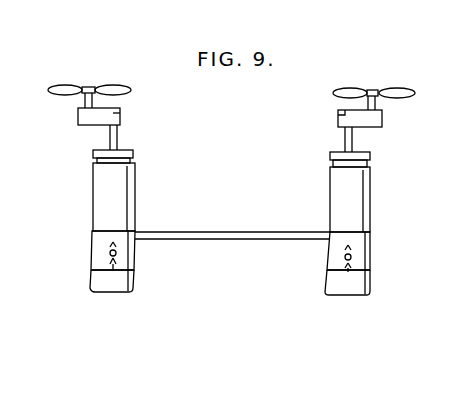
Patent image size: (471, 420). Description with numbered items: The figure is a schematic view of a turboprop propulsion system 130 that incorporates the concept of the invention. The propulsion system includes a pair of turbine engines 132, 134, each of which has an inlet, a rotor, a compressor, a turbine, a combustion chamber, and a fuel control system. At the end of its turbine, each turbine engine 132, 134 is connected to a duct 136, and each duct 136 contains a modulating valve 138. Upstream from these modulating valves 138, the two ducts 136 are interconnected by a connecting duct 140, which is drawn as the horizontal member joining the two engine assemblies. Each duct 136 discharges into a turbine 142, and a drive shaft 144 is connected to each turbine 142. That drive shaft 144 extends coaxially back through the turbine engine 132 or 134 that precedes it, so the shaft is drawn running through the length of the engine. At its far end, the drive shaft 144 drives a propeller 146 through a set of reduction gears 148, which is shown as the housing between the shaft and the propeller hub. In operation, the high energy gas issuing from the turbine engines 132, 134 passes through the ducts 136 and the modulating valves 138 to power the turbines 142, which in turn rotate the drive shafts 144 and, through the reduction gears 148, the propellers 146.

The turboprop propulsion system 130 is at (312, 86).
The turbine engine 132 is at (96, 186).
The turbine engine 134 is at (358, 184).
The duct 136 is at (92, 240).
The modulating valve 138 is at (108, 258).
The connecting duct 140 is at (232, 240).
The turbine 142 is at (93, 284).
The drive shaft 144 is at (119, 139).
The propeller 146 is at (55, 96).
The reduction gears 148 is at (121, 115).